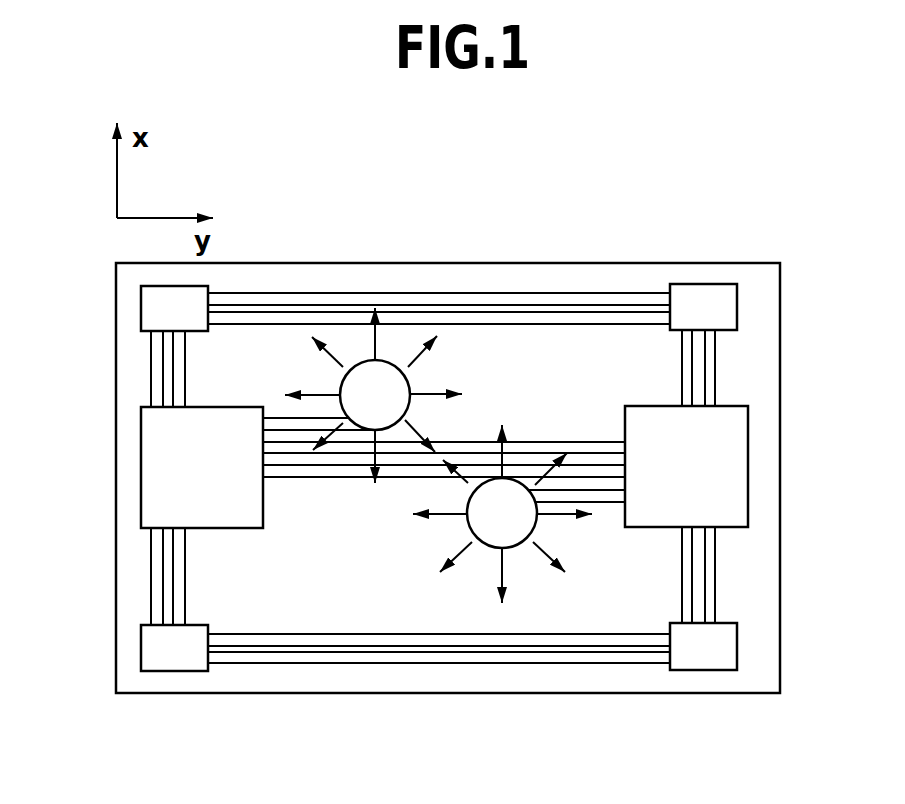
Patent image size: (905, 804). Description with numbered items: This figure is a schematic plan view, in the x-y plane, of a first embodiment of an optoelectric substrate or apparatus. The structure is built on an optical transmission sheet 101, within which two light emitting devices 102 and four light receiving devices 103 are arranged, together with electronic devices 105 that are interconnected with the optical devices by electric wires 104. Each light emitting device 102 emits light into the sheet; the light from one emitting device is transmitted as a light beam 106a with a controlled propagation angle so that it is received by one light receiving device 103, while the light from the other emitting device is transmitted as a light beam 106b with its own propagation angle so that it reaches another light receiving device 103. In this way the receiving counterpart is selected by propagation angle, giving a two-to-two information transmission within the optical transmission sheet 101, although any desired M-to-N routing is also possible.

The optical transmission sheet 101 is at (758, 673).
The light emitting device 102 is at (397, 431).
The light receiving device 103 is at (173, 308).
The electric wire 104 is at (275, 428).
The electronic device 105 is at (173, 468).
The light beam 106a is at (430, 393).
The light beam 106b is at (542, 547).